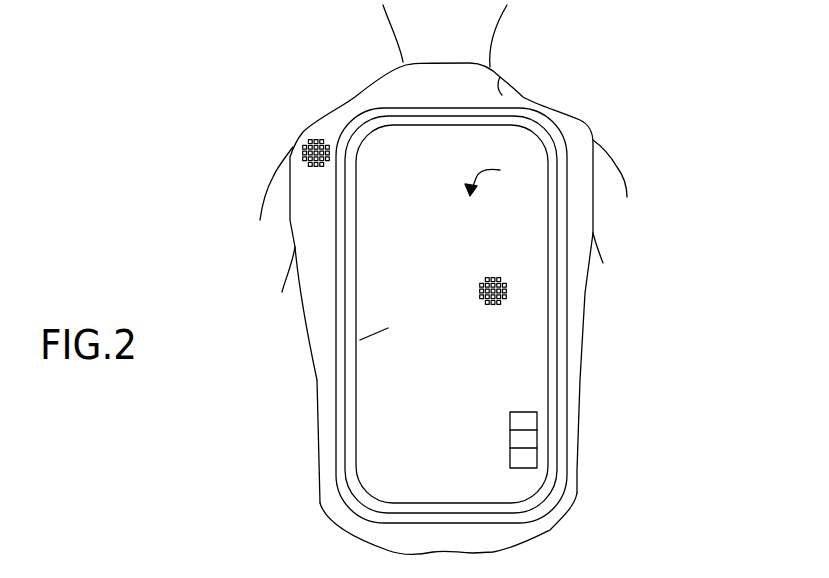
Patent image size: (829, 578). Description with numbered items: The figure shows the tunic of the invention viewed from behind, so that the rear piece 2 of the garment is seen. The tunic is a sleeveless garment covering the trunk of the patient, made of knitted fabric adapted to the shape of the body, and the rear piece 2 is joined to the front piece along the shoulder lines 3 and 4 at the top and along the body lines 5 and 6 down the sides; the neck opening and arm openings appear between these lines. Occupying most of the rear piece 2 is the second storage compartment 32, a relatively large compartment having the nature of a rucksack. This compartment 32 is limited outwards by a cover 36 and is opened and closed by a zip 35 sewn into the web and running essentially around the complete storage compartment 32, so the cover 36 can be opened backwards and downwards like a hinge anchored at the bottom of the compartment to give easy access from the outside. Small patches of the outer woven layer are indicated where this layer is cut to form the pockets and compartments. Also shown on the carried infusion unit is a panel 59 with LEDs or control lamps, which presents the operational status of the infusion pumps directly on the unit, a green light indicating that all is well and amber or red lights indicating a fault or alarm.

The rear piece 2 is at (500, 77).
The shoulder line 3 is at (547, 107).
The shoulder line 4 is at (355, 97).
The body line 5 is at (582, 362).
The body line 6 is at (323, 425).
The zip 35 is at (354, 492).
The cover 36 is at (396, 302).
The second storage compartment 32 is at (500, 170).
The panel with LEDs or control lamps 59 is at (535, 440).